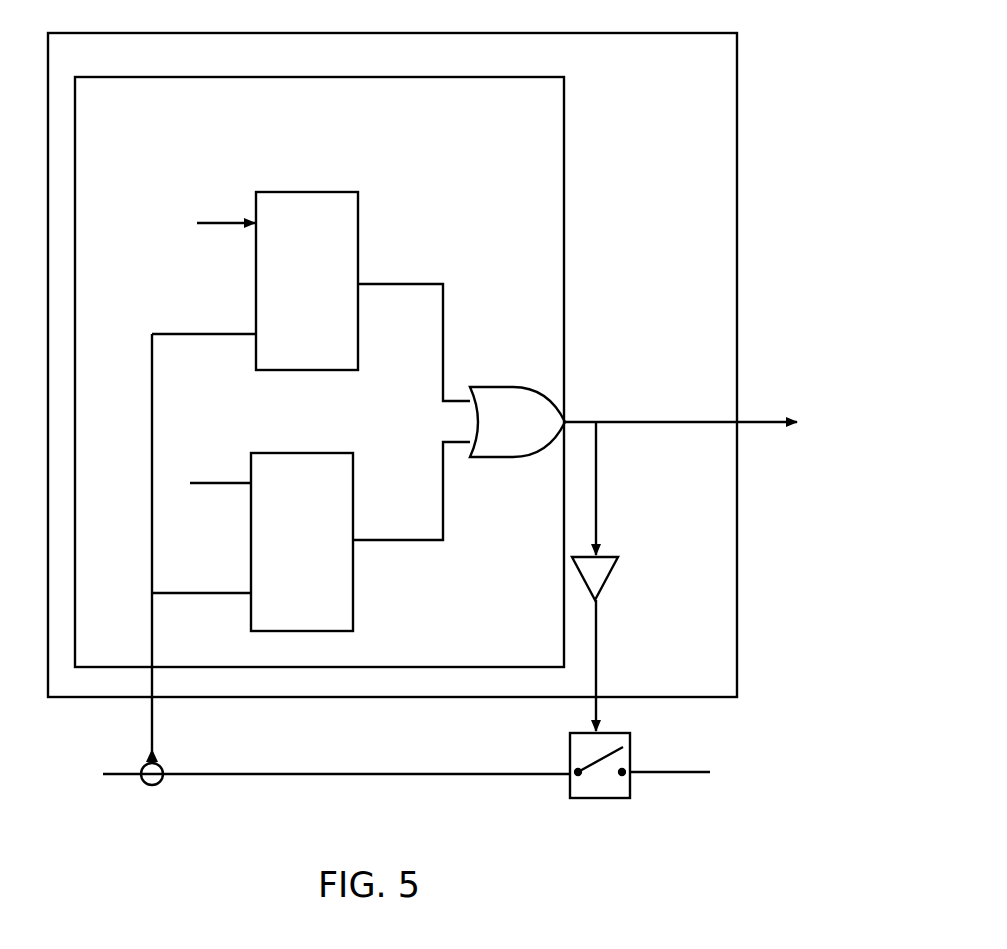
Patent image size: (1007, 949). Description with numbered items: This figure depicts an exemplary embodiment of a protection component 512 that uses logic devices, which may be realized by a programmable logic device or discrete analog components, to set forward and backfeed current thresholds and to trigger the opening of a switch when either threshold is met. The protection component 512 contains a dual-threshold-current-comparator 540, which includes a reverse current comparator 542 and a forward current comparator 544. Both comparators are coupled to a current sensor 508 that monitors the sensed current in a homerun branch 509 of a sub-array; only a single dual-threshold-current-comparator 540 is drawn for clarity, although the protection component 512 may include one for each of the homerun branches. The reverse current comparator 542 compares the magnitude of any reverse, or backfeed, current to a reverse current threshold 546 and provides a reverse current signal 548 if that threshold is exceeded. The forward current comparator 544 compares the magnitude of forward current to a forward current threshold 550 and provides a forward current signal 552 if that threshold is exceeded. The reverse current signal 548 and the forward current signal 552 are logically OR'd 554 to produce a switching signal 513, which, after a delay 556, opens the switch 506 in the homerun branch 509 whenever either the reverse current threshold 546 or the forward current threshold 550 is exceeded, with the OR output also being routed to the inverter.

The protection component 512 is at (682, 71).
The dual-threshold-current-comparator 540 is at (502, 113).
The reverse current comparator 542 is at (287, 225).
The forward current comparator 544 is at (282, 484).
The reverse current threshold 546 is at (222, 225).
The reverse current signal 548 is at (385, 283).
The forward current threshold 550 is at (225, 485).
The forward current signal 552 is at (368, 539).
The logical OR 554 is at (482, 386).
The switching signal 513 is at (597, 500).
The delay 556 is at (607, 557).
The switch 506 is at (628, 743).
The current sensor 508 is at (163, 768).
The homerun branch 509 is at (322, 773).